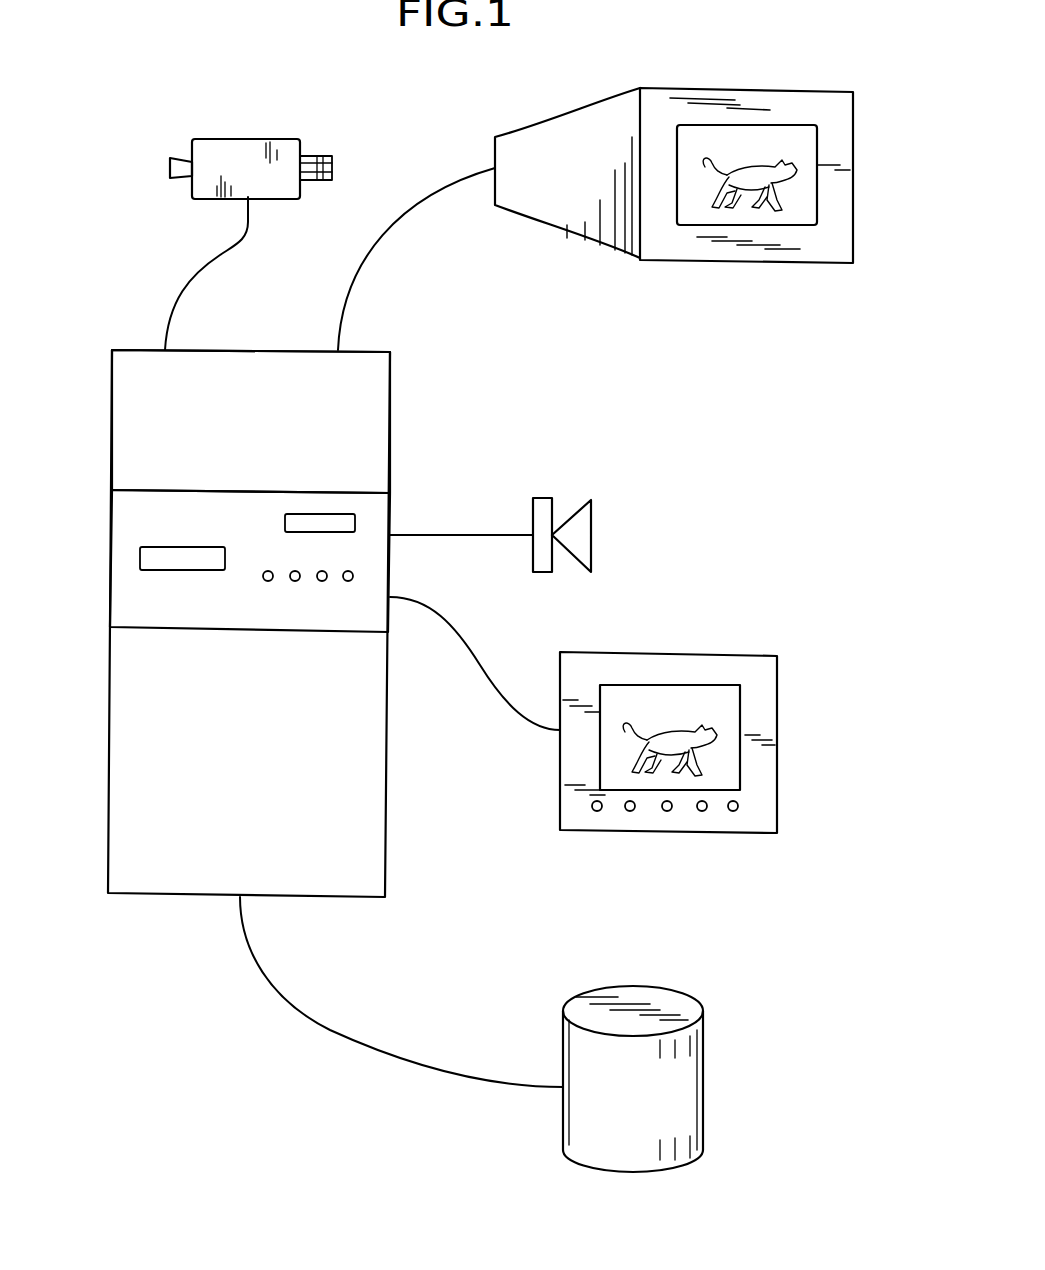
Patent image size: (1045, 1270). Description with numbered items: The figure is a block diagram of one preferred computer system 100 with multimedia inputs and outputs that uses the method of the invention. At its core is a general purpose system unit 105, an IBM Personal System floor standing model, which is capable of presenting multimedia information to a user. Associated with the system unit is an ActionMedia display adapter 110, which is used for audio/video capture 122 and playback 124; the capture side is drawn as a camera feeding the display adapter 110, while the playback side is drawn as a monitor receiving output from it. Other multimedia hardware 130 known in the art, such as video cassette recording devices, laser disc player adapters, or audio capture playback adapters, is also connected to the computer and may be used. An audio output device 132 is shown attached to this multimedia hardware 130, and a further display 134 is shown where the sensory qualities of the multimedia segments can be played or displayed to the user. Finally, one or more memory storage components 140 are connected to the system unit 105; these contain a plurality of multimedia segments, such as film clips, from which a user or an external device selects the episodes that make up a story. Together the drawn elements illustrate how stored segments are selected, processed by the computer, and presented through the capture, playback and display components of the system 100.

The computer system 100 is at (762, 433).
The system unit 105 is at (387, 781).
The display adapter 110 is at (390, 465).
The audio/video capture 122 is at (273, 165).
The playback 124 is at (853, 195).
The multimedia hardware 130 is at (115, 600).
The speaker 132 is at (591, 510).
The played segment display 134 is at (685, 705).
The memory storage component 140 is at (695, 1097).